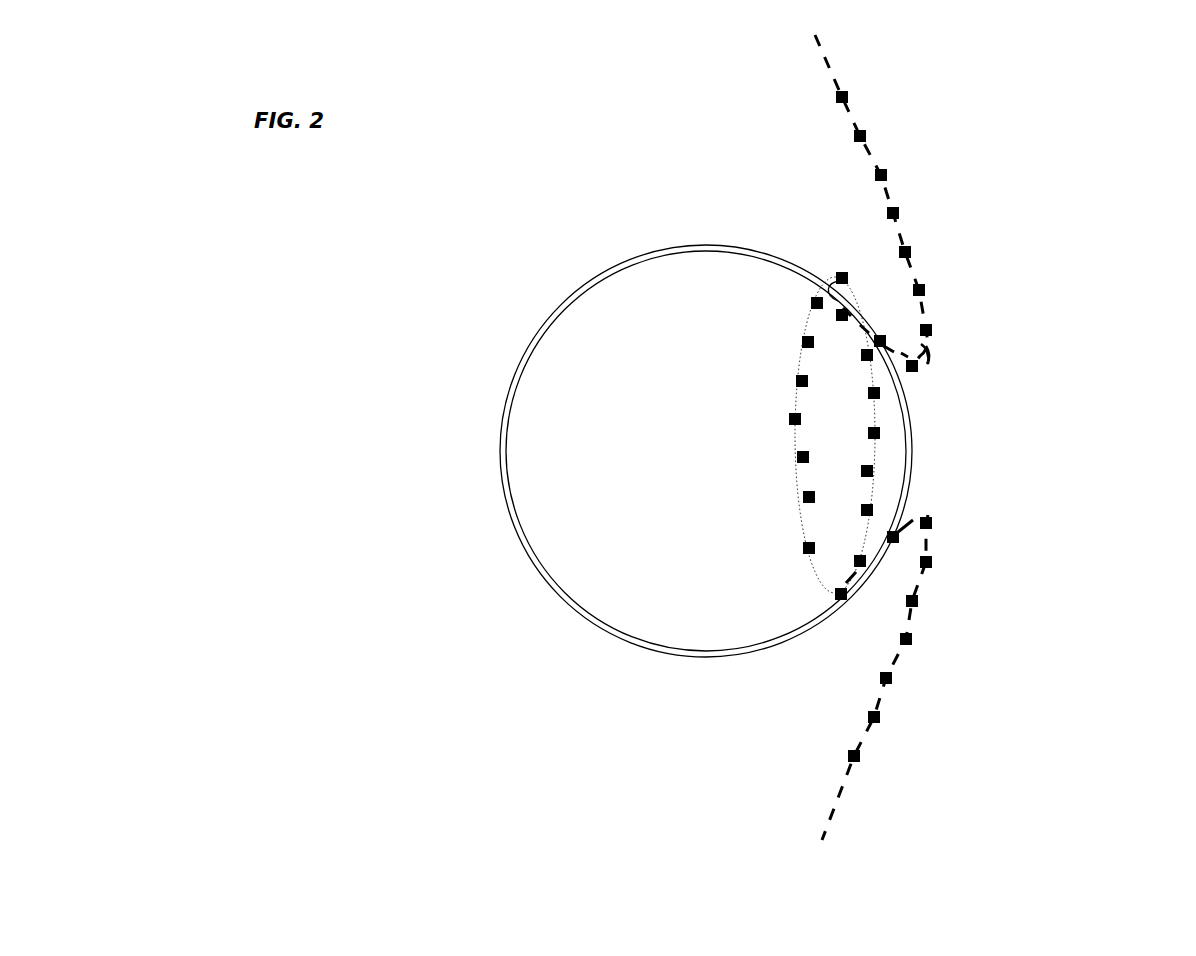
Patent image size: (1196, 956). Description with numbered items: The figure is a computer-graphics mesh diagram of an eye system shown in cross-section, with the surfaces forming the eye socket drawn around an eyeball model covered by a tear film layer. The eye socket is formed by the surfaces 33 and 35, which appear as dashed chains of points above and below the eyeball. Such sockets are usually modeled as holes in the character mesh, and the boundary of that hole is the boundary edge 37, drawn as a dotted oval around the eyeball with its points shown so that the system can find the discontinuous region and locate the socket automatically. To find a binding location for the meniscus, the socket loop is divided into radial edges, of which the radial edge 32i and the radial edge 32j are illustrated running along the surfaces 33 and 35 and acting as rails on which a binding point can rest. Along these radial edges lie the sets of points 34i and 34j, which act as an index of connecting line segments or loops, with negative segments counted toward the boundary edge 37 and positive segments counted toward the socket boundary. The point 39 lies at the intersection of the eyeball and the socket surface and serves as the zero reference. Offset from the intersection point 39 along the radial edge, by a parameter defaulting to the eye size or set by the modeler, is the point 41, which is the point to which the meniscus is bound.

The surface 33 is at (916, 82).
The radial edge 32i is at (868, 152).
The set of points 34i is at (907, 252).
The point 39 is at (882, 340).
The point 41 is at (934, 360).
The boundary edge 37 is at (806, 522).
The surface 35 is at (936, 712).
The set of points 34j is at (913, 640).
The radial edge 32j is at (842, 800).